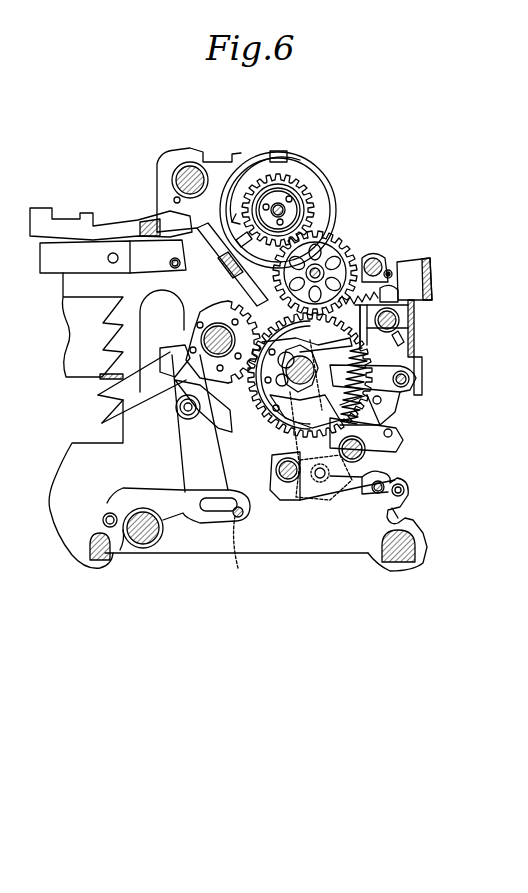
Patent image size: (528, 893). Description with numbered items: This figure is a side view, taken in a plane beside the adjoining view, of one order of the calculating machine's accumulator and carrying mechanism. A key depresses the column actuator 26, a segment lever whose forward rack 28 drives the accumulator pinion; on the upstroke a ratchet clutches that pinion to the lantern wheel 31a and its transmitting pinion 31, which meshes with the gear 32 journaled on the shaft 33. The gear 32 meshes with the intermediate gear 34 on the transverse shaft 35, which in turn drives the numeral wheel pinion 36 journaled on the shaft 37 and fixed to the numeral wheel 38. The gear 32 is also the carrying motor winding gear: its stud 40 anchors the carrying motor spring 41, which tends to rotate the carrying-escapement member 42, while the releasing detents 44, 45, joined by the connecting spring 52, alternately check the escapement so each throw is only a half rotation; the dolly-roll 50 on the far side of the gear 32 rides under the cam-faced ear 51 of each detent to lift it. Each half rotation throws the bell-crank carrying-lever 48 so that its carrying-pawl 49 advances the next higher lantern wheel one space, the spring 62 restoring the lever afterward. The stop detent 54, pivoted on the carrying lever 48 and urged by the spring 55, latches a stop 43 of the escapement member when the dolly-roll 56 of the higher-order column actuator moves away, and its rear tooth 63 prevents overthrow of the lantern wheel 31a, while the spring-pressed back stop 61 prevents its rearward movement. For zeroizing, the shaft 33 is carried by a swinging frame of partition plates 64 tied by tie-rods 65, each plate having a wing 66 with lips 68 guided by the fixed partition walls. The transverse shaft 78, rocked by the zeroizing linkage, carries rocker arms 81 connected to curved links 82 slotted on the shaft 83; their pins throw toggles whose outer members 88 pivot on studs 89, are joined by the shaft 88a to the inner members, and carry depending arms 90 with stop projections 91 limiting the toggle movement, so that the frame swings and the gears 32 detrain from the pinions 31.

The column actuator 26 is at (80, 283).
The rack 28 is at (148, 232).
The transmitting pinion 31 is at (186, 328).
The lantern wheel 31a is at (189, 339).
The carrying motor winding gear 32 is at (264, 440).
The shaft 33 is at (298, 372).
The intermediate gear 34 is at (320, 266).
The transverse shaft 35 is at (326, 290).
The numeral wheel pinion 36 is at (282, 206).
The shaft 37 is at (302, 190).
The numeral wheel 38 is at (256, 190).
The stud 40 is at (410, 380).
The carrying motor spring 41 is at (412, 368).
The carrying-escapement member 42 is at (330, 498).
The stop 43 is at (406, 345).
The releasing detent 44 is at (417, 395).
The releasing detent 45 is at (386, 438).
The bell-crank carrying-lever 48 is at (381, 258).
The carrying-pawl 49 is at (178, 410).
The dolly-roll 50 is at (398, 304).
The cam-faced ear 51 is at (391, 272).
The connecting spring 52 is at (398, 413).
The stop detent 54 is at (172, 385).
The spring 55 is at (196, 425).
The dolly-roll 56 is at (188, 420).
The back stop 61 is at (190, 298).
The spring 62 is at (421, 270).
The tooth 63 is at (120, 385).
The partition plate 64 is at (416, 333).
The tie-rod 65 is at (400, 320).
The wing 66 is at (418, 340).
The lip 68 is at (394, 292).
The transverse shaft 78 is at (146, 548).
The rocker arm 81 is at (104, 562).
The curved link 82 is at (188, 508).
The transverse shaft 83 is at (240, 560).
The toggle member 88 is at (392, 481).
The shaft 88a is at (382, 481).
The stud 89 is at (405, 491).
The depending arm 90 is at (408, 512).
The stop projection 91 is at (420, 533).